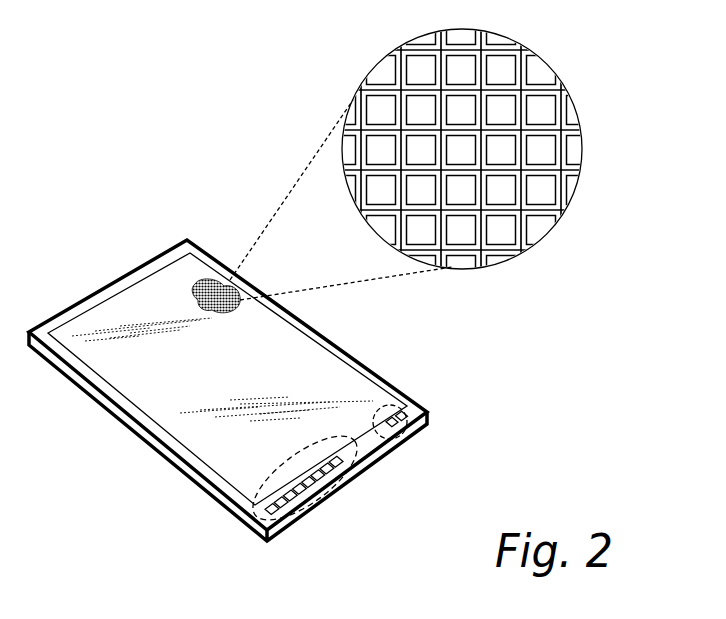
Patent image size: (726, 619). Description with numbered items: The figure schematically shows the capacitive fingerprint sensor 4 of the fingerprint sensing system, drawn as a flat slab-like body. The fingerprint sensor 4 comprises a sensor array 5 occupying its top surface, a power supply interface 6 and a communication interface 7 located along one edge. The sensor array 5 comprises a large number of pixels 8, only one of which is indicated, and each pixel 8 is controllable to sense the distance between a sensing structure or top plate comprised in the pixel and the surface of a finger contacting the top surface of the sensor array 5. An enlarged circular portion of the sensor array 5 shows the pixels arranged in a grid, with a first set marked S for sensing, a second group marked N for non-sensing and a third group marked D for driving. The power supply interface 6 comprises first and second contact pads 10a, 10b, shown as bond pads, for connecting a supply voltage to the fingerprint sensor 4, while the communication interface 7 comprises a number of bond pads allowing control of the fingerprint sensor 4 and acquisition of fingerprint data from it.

The capacitive fingerprint sensor 4 is at (203, 183).
The sensor array 5 is at (332, 365).
The power supply interface 6 is at (421, 440).
The communication interface 7 is at (317, 523).
The pixel 8 is at (584, 155).
The first contact pad 10a is at (386, 444).
The second contact pad 10b is at (411, 412).